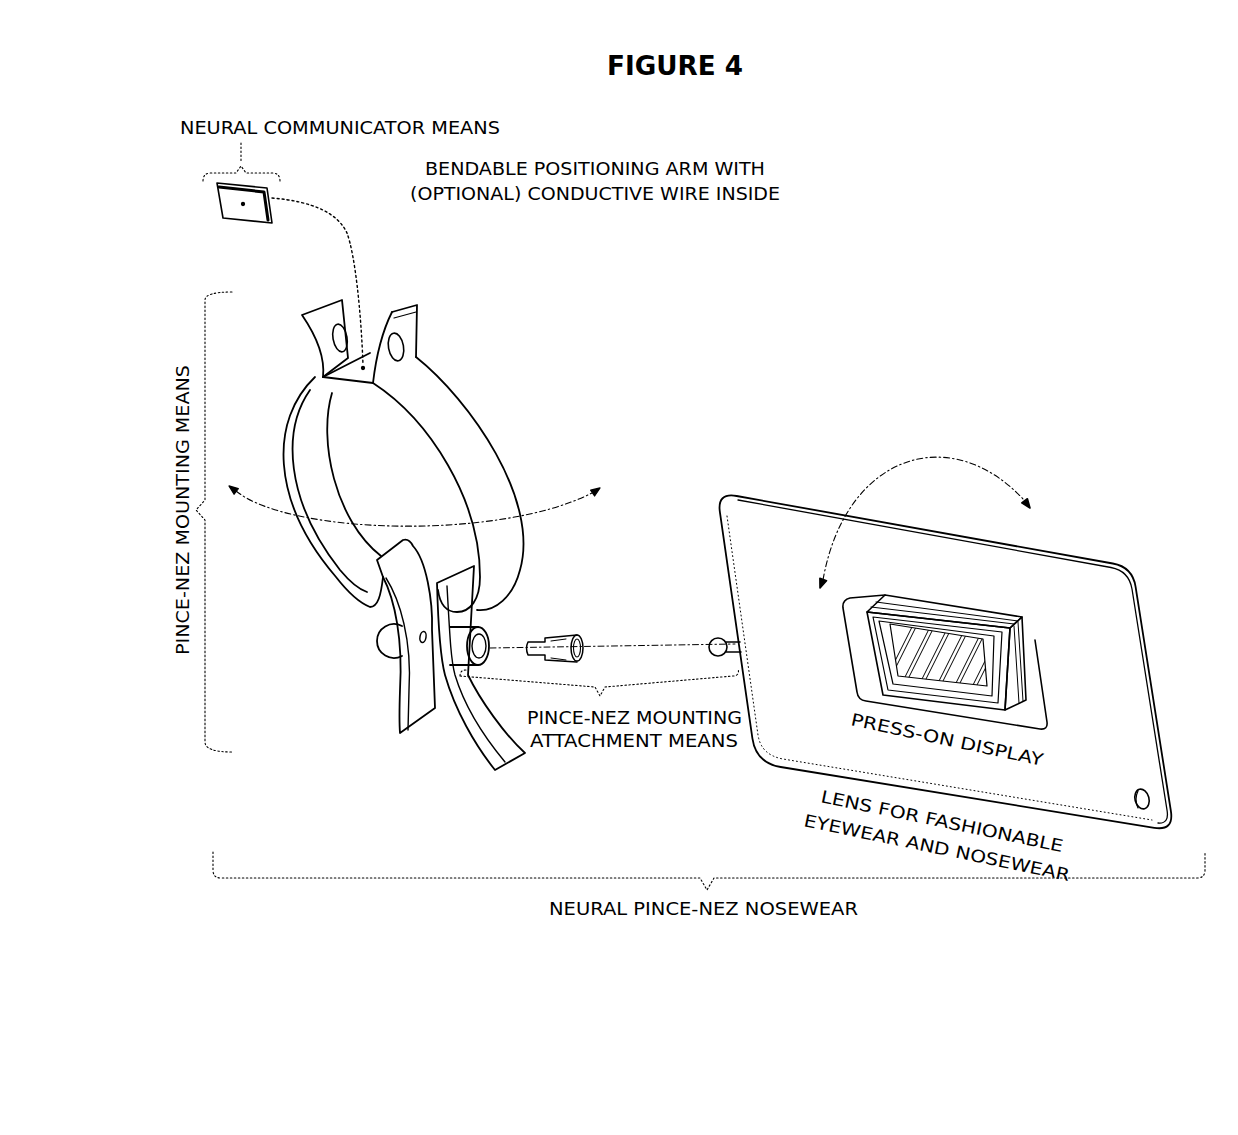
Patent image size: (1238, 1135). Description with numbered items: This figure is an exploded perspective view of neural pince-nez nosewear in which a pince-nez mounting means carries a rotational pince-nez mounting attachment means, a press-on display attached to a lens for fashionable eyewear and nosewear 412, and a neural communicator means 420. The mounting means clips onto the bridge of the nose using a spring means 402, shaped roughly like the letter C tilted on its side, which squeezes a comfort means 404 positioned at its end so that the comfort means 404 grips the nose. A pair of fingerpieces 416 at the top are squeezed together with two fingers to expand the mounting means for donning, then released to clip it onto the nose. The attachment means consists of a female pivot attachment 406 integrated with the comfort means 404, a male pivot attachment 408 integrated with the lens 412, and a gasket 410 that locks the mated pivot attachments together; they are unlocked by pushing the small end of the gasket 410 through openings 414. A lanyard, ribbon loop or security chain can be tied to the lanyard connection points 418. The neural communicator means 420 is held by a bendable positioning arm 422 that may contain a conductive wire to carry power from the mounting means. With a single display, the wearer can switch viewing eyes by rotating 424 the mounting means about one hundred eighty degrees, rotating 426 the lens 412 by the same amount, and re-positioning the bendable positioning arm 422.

The spring means 402 is at (465, 432).
The comfort means 404 is at (468, 748).
The pivot attachment (female) 406 is at (467, 662).
The pivot attachment (male) 408 is at (718, 638).
The gasket 410 is at (560, 635).
The lens for fashionable eyewear and nosewear 412 is at (1057, 553).
The openings 414 is at (425, 634).
The fingerpieces 416 is at (342, 296).
The lanyard connection points 418 is at (358, 327).
The neural communicator means 420 is at (243, 228).
The bendable positioning arm 422 is at (333, 200).
The rotating (pince-nez mounting means) 424 is at (585, 488).
The rotating (lens) 426 is at (876, 468).